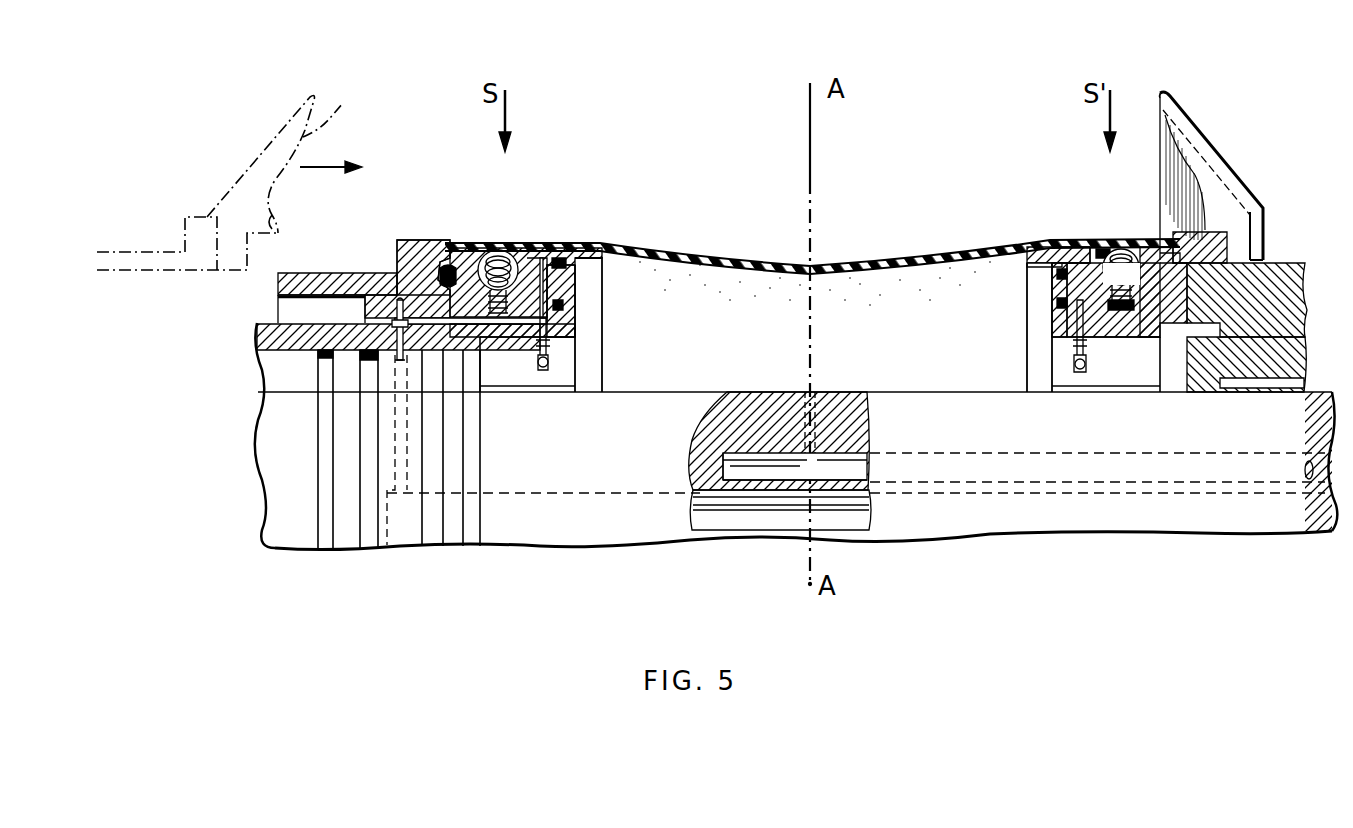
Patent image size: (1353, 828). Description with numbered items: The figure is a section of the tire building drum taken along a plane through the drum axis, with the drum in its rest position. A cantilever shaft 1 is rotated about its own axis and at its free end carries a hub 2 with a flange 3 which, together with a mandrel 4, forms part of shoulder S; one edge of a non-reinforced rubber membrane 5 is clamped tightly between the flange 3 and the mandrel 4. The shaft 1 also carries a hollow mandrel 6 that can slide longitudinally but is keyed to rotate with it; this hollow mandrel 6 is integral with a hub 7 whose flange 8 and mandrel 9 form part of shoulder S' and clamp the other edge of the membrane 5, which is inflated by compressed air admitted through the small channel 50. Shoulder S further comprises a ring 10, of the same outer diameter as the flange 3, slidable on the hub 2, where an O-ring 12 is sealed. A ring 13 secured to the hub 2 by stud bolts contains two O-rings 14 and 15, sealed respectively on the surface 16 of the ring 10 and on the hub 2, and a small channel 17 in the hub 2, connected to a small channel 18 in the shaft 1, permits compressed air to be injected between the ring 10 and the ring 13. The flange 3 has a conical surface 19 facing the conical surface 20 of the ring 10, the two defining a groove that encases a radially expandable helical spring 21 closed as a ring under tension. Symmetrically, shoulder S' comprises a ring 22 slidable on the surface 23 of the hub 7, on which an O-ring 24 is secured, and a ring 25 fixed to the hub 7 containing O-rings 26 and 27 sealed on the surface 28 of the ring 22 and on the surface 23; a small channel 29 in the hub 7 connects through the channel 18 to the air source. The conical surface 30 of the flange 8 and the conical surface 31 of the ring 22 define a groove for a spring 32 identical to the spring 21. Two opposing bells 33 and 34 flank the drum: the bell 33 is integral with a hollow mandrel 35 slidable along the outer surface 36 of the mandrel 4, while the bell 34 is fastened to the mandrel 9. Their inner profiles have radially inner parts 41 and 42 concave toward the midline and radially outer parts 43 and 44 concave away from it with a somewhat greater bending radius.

The cantilever shaft 1 is at (678, 392).
The hub 2 is at (382, 300).
The flange 3 is at (460, 244).
The mandrel 4 is at (417, 240).
The non-reinforced rubber membrane 5 is at (733, 262).
The hollow mandrel 6 is at (1297, 383).
The hub 7 is at (1285, 315).
The flange 8 is at (1160, 253).
The mandrel 9 is at (1213, 250).
The ring 10 is at (550, 262).
The O-ring 12 is at (522, 307).
The ring 13 is at (560, 288).
The O-ring 14 is at (562, 260).
The O-ring 15 is at (557, 305).
The surface 16 is at (590, 265).
The small channel 17 is at (538, 365).
The small channel 18 is at (405, 456).
The conical surface 19 is at (490, 250).
The conical surface 20 is at (533, 250).
The helical spring 21 is at (503, 253).
The ring 22 is at (1042, 242).
The surface 23 is at (1120, 310).
The O-ring 24 is at (1087, 313).
The ring 25 is at (1067, 285).
The O-ring 26 is at (1067, 265).
The O-ring 27 is at (1067, 308).
The surface 28 is at (1027, 266).
The small channel 29 is at (1090, 367).
The conical surface 30 is at (1137, 243).
The conical surface 31 is at (1090, 242).
The spring 32 is at (1107, 242).
The bell 33 is at (263, 158).
The bell 34 is at (1210, 160).
The hollow mandrel 35 is at (188, 235).
The outer surface 36 is at (316, 275).
The radially inner part 41 is at (272, 215).
The radially inner part 42 is at (1205, 190).
The radially outer part 43 is at (323, 130).
The radially outer part 44 is at (1160, 128).
The small channel 50 is at (818, 392).